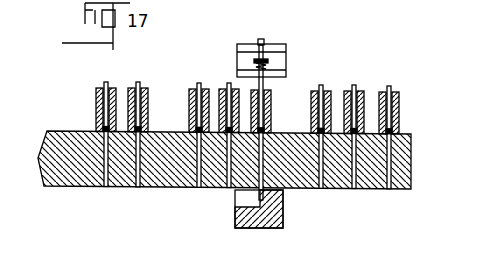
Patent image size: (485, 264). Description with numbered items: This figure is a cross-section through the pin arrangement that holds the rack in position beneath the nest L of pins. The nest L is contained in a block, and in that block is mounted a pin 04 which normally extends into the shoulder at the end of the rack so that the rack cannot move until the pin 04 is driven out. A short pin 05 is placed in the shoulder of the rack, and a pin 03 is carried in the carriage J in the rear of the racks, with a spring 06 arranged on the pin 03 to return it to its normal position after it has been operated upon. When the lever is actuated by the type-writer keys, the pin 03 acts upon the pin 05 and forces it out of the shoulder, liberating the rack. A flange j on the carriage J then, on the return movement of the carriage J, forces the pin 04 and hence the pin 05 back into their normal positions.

The pin 03 is at (263, 42).
The pin 04 is at (103, 188).
The short pin 05 is at (138, 83).
The spring 06 is at (255, 61).
The flange j is at (284, 193).
The carriage J is at (269, 219).
The nest L is at (411, 138).